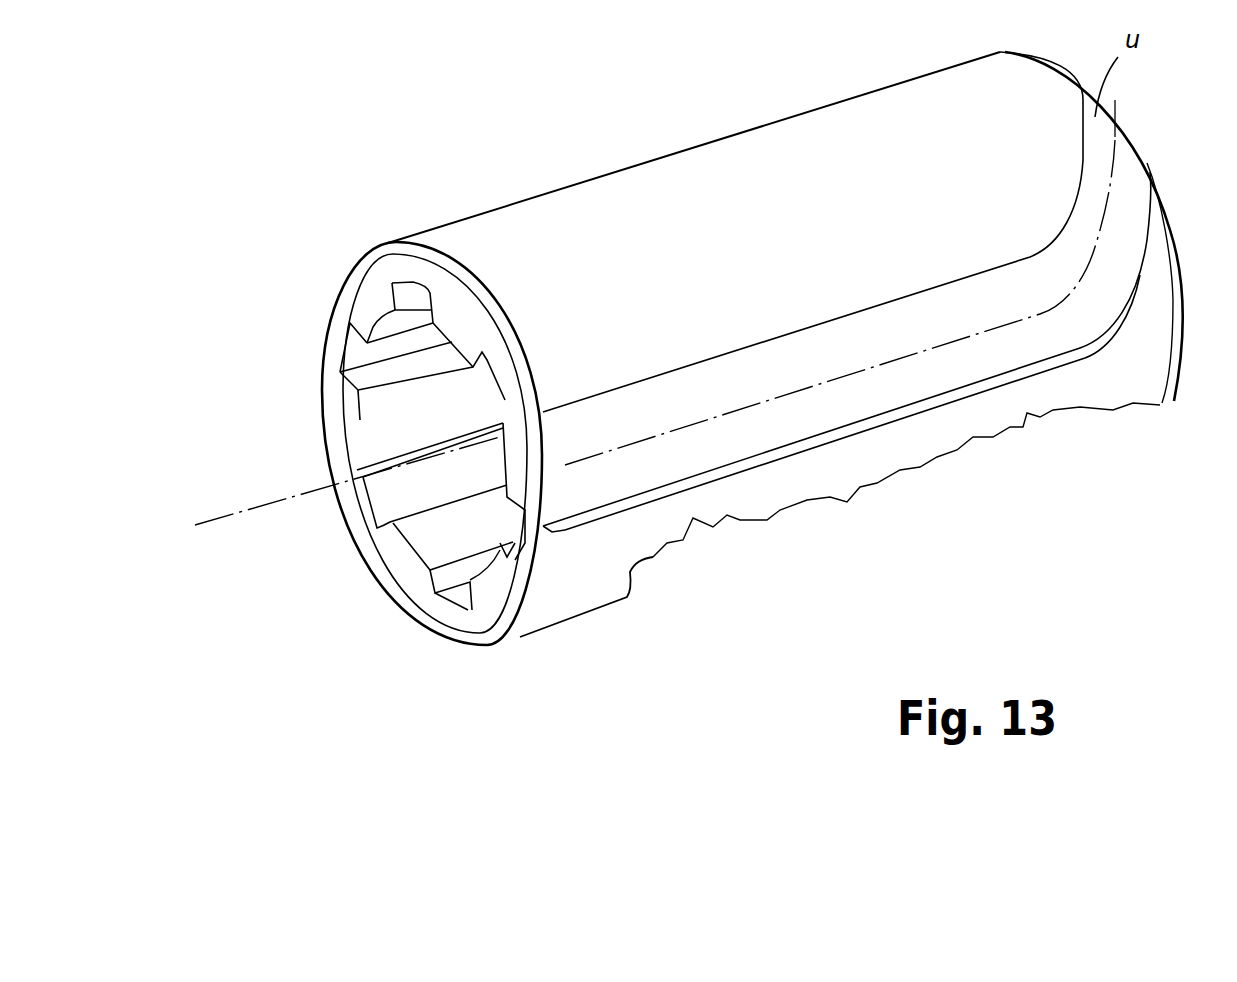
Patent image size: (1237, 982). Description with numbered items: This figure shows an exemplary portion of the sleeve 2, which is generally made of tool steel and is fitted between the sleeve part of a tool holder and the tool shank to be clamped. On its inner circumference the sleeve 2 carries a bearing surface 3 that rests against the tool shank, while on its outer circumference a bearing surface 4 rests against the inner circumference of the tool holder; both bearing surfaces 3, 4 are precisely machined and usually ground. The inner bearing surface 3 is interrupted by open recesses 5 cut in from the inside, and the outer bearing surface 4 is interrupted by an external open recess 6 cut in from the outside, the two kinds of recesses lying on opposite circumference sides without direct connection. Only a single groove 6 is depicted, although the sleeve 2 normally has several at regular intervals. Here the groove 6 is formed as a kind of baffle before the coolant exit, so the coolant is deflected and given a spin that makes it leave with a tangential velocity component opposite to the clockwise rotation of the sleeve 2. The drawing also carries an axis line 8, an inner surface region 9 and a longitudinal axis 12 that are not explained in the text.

The sleeve 2 is at (352, 153).
The bearing surface 3 is at (378, 325).
The bearing surface 4 is at (843, 110).
The open recess 5 is at (353, 347).
The open recess 6 is at (1117, 257).
The tab axis 8 is at (235, 510).
The inner surface 9 is at (452, 312).
The longitudinal axis 12 is at (922, 353).